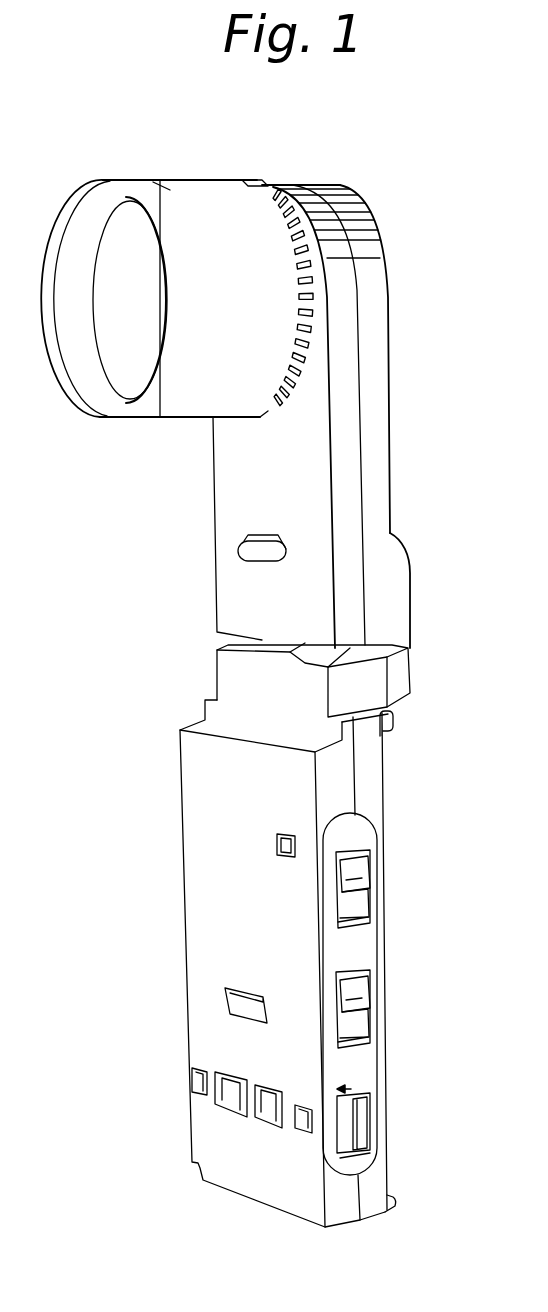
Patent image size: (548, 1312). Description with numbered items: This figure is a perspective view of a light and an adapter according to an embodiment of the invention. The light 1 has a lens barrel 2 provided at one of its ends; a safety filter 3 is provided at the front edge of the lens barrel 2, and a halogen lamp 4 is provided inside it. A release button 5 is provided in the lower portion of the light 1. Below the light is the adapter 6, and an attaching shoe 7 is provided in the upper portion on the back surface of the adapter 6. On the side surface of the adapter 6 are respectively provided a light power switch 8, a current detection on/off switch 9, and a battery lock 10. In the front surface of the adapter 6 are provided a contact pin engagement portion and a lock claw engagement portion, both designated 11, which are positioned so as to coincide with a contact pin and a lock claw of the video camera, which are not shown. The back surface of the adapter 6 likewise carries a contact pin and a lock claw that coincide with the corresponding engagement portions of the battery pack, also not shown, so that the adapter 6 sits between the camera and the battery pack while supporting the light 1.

The light 1 is at (350, 407).
The lens barrel 2 is at (223, 180).
The safety filter 3 is at (142, 180).
The halogen lamp 4 is at (118, 350).
The release button 5 is at (240, 555).
The adapter 6 is at (200, 887).
The attaching shoe 7 is at (410, 682).
The light power switch 8 is at (372, 1022).
The current detection on/off switch 9 is at (372, 920).
The battery lock 10 is at (372, 1127).
The contact pin engagement portion and lock claw engagement portion 11 is at (278, 845).